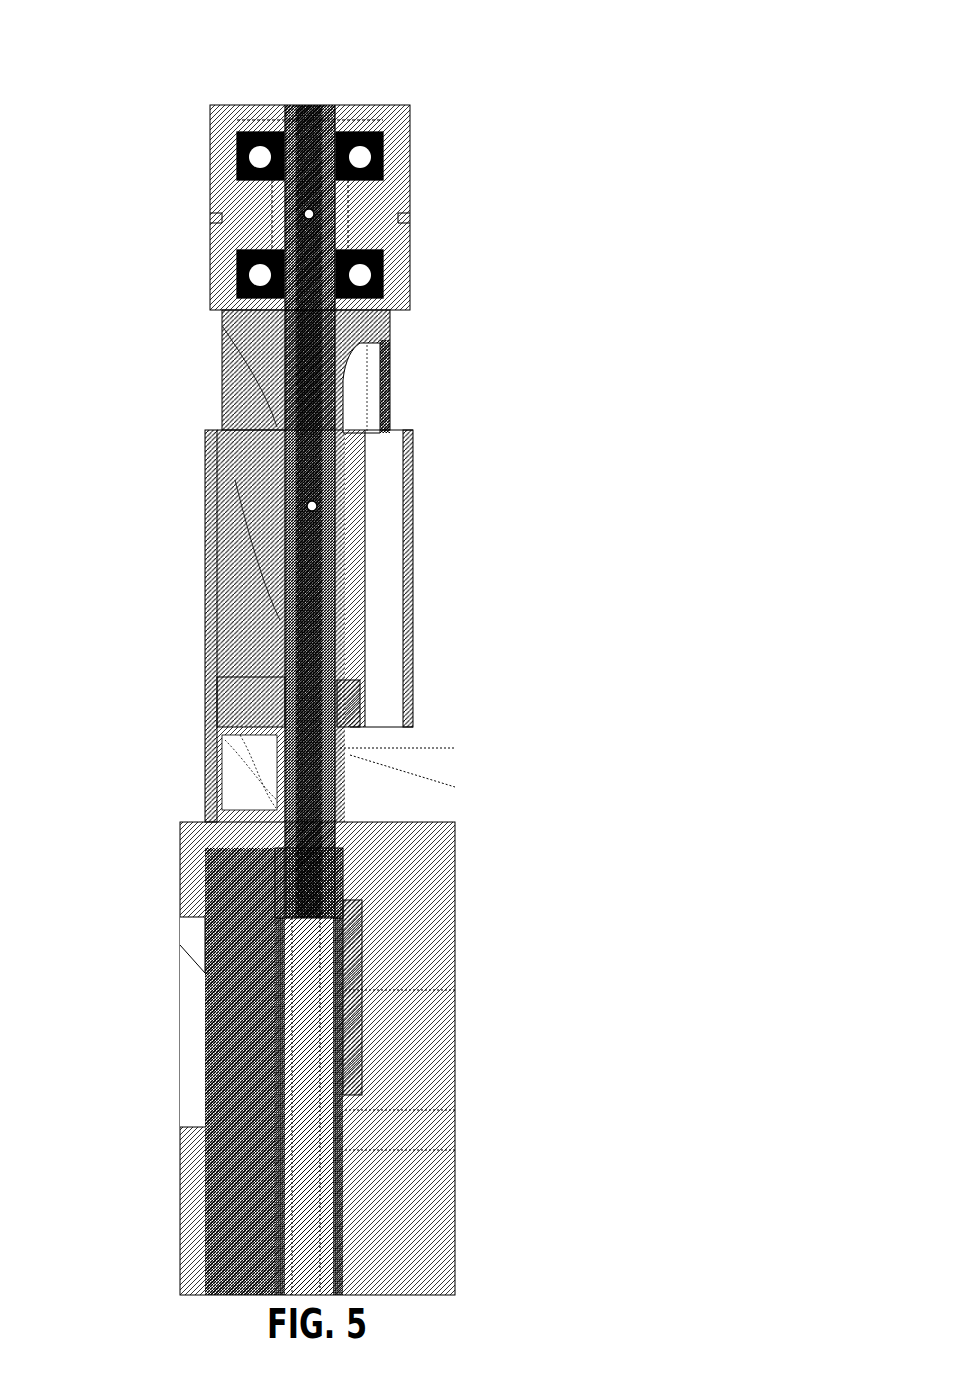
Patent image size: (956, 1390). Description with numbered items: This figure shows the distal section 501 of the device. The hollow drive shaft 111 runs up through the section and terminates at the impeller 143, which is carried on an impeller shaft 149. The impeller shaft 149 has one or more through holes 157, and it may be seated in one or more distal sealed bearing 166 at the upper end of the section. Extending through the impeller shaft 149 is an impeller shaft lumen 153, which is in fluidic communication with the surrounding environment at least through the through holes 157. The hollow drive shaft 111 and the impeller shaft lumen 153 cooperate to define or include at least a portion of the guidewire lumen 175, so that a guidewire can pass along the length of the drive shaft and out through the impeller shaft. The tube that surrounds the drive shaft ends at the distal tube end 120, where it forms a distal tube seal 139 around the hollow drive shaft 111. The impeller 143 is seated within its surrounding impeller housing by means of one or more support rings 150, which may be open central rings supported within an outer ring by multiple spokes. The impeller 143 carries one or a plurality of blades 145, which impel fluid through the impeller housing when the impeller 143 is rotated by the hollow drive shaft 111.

The distal section 501 is at (307, 66).
The distal sealed bearing 166 is at (363, 157).
The through holes 157 is at (314, 213).
The blades 145 is at (223, 392).
The impeller shaft 149 is at (333, 422).
The impeller 143 is at (250, 531).
The impeller shaft lumen 153 is at (312, 607).
The support rings 150 is at (257, 705).
The distal tube end 120 is at (400, 757).
The distal tube seal 139 is at (340, 797).
The guidewire lumen 175 is at (307, 860).
The hollow drive shaft 111 is at (318, 1163).